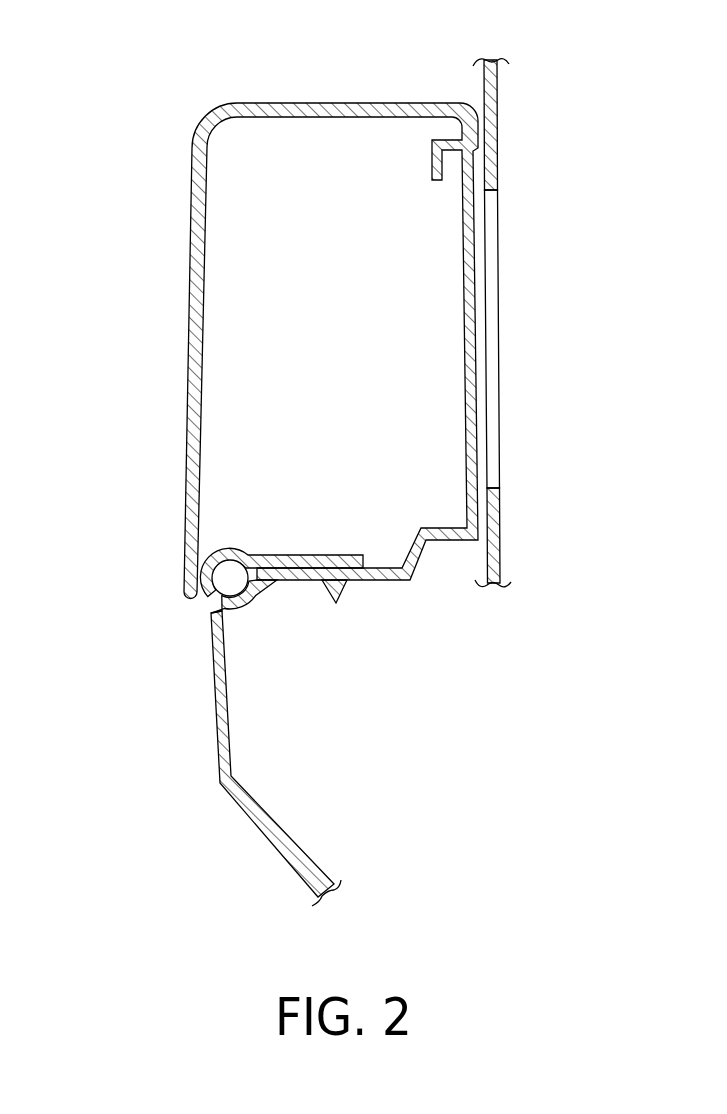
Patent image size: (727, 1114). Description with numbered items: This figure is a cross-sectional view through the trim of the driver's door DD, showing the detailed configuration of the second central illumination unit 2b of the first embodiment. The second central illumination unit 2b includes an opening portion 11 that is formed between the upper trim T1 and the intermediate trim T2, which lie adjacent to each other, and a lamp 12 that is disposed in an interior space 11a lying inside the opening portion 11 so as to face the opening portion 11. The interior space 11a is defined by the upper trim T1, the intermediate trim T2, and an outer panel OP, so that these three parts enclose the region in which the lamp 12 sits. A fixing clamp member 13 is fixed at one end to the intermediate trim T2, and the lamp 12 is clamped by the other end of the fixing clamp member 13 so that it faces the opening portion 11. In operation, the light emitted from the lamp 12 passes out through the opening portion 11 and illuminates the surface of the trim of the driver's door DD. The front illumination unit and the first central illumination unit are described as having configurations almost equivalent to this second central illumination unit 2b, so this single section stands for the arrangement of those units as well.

The driver's door DD is at (174, 71).
The upper trim T1 is at (191, 188).
The intermediate trim T2 is at (214, 716).
The outer panel OP is at (498, 165).
The interior space 11a is at (343, 383).
The second central illumination unit 2b is at (170, 606).
The opening portion 11 is at (213, 603).
The lamp 12 is at (230, 586).
The fixing clamp member 13 is at (265, 556).